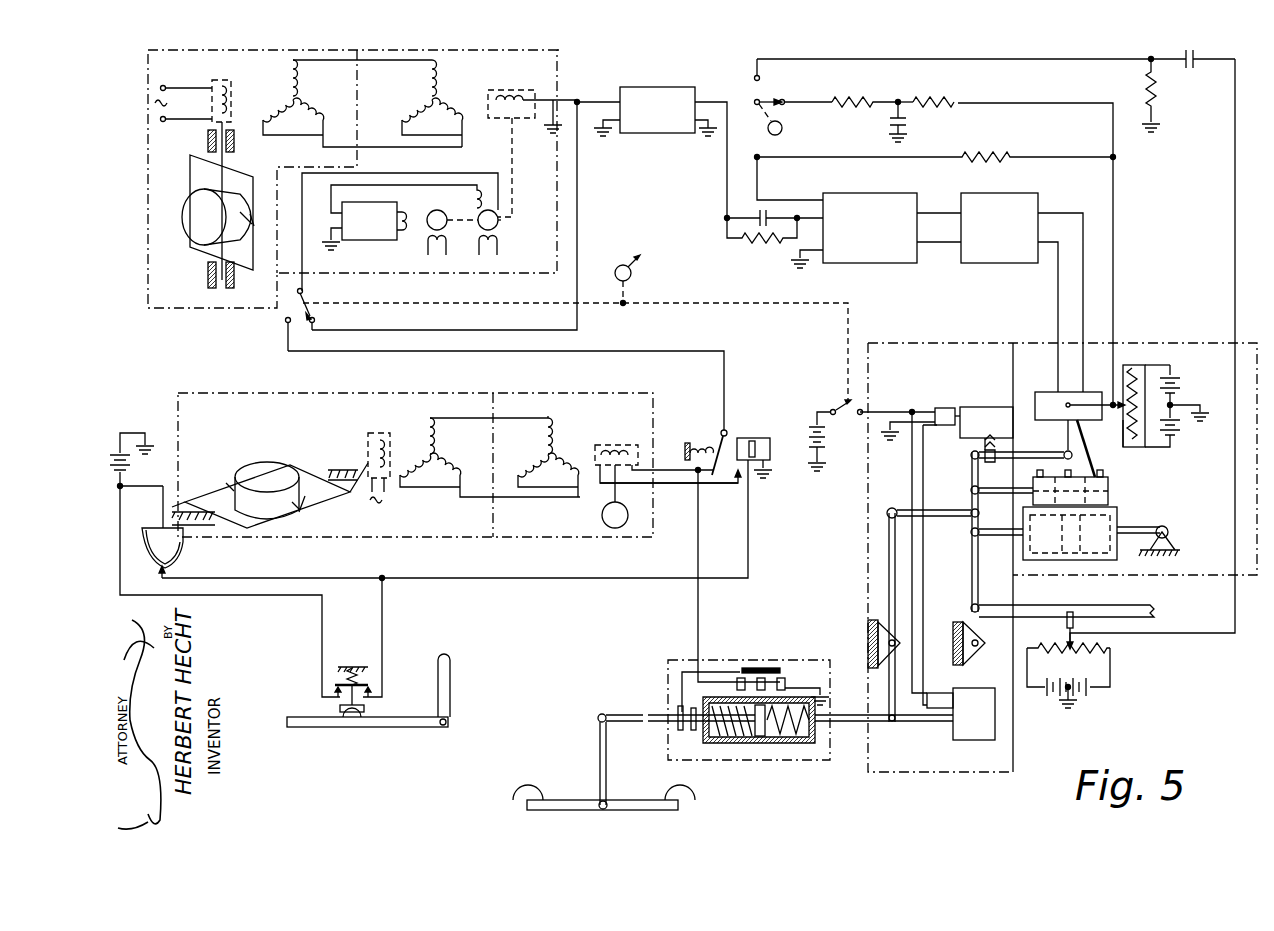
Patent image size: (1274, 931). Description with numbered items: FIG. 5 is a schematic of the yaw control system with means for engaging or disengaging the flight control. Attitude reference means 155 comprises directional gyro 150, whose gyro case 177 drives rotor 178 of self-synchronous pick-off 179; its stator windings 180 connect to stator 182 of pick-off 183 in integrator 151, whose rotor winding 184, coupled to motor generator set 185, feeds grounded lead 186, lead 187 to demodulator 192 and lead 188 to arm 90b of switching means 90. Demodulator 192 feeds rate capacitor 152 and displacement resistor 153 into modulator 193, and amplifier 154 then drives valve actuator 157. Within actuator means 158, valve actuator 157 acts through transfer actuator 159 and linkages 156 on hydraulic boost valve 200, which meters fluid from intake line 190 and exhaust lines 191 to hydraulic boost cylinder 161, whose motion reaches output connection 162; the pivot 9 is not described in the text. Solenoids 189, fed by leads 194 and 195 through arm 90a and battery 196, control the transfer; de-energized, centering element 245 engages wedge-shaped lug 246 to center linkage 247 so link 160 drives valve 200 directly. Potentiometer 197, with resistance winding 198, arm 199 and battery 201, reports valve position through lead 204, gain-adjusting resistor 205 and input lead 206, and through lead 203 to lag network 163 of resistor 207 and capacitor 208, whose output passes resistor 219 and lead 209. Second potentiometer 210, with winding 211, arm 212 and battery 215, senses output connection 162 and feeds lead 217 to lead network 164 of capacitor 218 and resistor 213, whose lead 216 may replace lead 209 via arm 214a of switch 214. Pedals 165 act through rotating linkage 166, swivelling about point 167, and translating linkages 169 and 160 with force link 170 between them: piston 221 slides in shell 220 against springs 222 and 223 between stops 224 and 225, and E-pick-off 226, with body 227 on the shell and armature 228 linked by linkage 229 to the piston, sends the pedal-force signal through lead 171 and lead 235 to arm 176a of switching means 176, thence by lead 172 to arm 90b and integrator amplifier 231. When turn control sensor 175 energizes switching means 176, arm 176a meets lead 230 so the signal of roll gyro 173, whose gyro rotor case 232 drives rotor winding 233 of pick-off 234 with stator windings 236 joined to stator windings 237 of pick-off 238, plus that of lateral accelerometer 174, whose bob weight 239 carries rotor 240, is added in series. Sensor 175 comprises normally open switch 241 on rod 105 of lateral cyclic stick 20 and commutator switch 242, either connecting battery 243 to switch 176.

The pivot support 9 is at (1179, 559).
The lateral cyclic stick 20 is at (450, 683).
The switching means 90 is at (632, 275).
The arm of switching means 90a is at (857, 420).
The arm of switching means 90b is at (311, 294).
The rod 105 is at (388, 728).
The directional gyro 150 is at (192, 262).
The integrator 151 is at (559, 51).
The rate capacitor 152 is at (769, 220).
The displacement resistor 153 is at (748, 246).
The amplifier 154 is at (1010, 193).
The attitude reference means 155 is at (148, 279).
The linkages 156 is at (966, 534).
The valve actuator 157 is at (1045, 392).
The actuator means 158 is at (1037, 343).
The transfer actuator 159 is at (920, 375).
The link 160 is at (869, 731).
The hydraulic boost cylinder 161 is at (1118, 517).
The output connection 162 is at (1120, 600).
The lag network 163 is at (967, 138).
The lead network 164 is at (1207, 108).
The pedals 165 is at (525, 787).
The rotating linkage 166 is at (598, 750).
The point 167 is at (600, 815).
The translating linkage 169 is at (623, 715).
The force link 170 is at (828, 761).
The lead 171 is at (698, 600).
The lead 172 is at (684, 351).
The roll gyro 173 is at (343, 393).
The lateral accelerometer 174 is at (606, 393).
The turn control sensor 175 is at (392, 588).
The switching means 176 is at (740, 437).
The arm of switching means 176a is at (722, 432).
The gyro case 177 is at (184, 204).
The rotor winding 178 is at (233, 86).
The self-synchronous pick-off device 179 is at (274, 71).
The stator windings 180 is at (310, 114).
The stator 182 is at (445, 114).
The self-synchronous pick-off device 183 is at (487, 82).
The rotor winding 184 is at (512, 90).
The motor generator set 185 is at (501, 222).
The lead 186 is at (547, 129).
The lead 187 is at (577, 100).
The lead 188 is at (578, 205).
The solenoids 189 is at (965, 408).
The intake line 190 is at (1066, 453).
The exhaust lines 191 is at (1036, 474).
The demodulator 192 is at (672, 87).
The modulator 193 is at (888, 193).
The lead 194 is at (926, 408).
The lead 195 is at (974, 452).
The battery 196 is at (812, 455).
The potentiometer 197 is at (1139, 383).
The resistance winding 198 is at (1135, 444).
The arm 199 is at (1082, 424).
The hydraulic boost valve 200 is at (1110, 490).
The battery 201 is at (1183, 376).
The lead 203 is at (1060, 103).
The lead 204 is at (1088, 157).
The gain-adjusting resistor 205 is at (998, 156).
The input lead 206 is at (783, 199).
The resistor 207 is at (948, 100).
The capacitor 208 is at (890, 128).
The lead 209 is at (810, 100).
The second potentiometer 210 is at (1085, 675).
The resistance winding 211 is at (1115, 648).
The arm 212 is at (1064, 642).
The resistor 213 is at (1147, 100).
The switch 214 is at (782, 133).
The arm of switch 214a is at (750, 100).
The battery 215 is at (1100, 704).
The lead 216 is at (1020, 60).
The lead 217 is at (1235, 266).
The capacitor 218 is at (1200, 54).
The resistor 219 is at (888, 88).
The shell 220 is at (822, 710).
The piston 221 is at (760, 740).
The spring 222 is at (787, 742).
The spring 223 is at (725, 743).
The stop 224 is at (678, 729).
The stop 225 is at (695, 740).
The E-pick-off 226 is at (789, 672).
The body 227 is at (787, 688).
The armature 228 is at (759, 668).
The linkage 229 is at (712, 670).
The lead 230 is at (684, 492).
The integrator amplifier 231 is at (359, 242).
The gyro rotor case 232 is at (256, 470).
The rotor winding 233 is at (365, 448).
The self-synchronous pick-off 234 is at (401, 445).
The lead 235 is at (661, 464).
The stator windings 236 is at (440, 455).
The stator windings 237 is at (538, 455).
The self-synchronous pick-off 238 is at (562, 447).
The bob weight 239 is at (602, 518).
The rotor 240 is at (615, 445).
The normally open switch 241 is at (330, 696).
The commutator switch 242 is at (185, 552).
The battery 243 is at (119, 468).
The centering element 245 is at (992, 439).
The wedge-shaped lug 246 is at (982, 456).
The linkage 247 is at (982, 470).